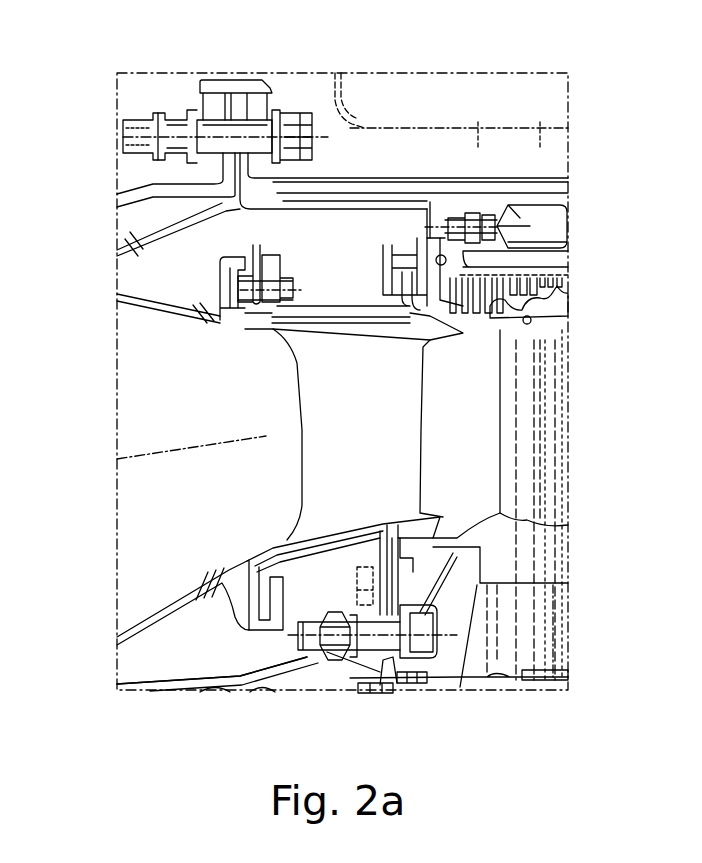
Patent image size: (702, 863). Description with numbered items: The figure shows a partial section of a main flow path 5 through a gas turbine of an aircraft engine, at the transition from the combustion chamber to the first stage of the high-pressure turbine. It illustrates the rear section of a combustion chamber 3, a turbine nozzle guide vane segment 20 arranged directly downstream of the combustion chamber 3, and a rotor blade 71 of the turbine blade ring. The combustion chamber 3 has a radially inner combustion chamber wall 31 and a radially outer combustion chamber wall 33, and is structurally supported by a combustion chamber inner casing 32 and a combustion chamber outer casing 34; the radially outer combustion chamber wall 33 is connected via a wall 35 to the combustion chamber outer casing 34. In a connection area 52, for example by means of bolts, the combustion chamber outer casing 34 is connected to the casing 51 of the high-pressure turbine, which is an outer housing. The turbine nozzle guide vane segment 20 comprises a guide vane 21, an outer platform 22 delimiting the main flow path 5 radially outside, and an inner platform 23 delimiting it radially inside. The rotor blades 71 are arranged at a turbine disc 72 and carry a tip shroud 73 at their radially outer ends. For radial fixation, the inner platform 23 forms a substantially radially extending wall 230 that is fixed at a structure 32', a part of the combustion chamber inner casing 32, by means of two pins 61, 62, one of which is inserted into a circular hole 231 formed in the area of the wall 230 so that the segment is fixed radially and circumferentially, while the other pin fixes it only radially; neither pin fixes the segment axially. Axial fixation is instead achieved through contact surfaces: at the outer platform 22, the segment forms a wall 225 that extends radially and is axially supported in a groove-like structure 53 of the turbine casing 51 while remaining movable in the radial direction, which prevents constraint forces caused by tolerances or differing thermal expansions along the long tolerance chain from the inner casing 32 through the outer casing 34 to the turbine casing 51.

The combustion chamber 3 is at (154, 424).
The main flow path 5 is at (471, 446).
The turbine nozzle guide vane segment 20 is at (298, 385).
The guide vane 21 is at (372, 447).
The outer platform 22 is at (263, 320).
The inner platform 23 is at (267, 553).
The radially inner combustion chamber wall 31 is at (144, 622).
The combustion chamber inner casing 32 is at (357, 691).
The structure 32' is at (372, 676).
The radially outer combustion chamber wall 33 is at (143, 312).
The combustion chamber outer casing 34 is at (145, 190).
The wall 35 is at (178, 222).
The casing of the high-pressure turbine 51 is at (413, 190).
The connection area 52 is at (244, 130).
The groove-like structure 53 is at (383, 245).
The pin 61 is at (298, 648).
The pin 62 is at (212, 670).
The rotor blade 71 is at (560, 423).
The turbine disc 72 is at (558, 618).
The tip shroud 73 is at (560, 310).
The wall 225 is at (385, 285).
The wall 230 is at (378, 568).
The circular hole 231 is at (385, 690).